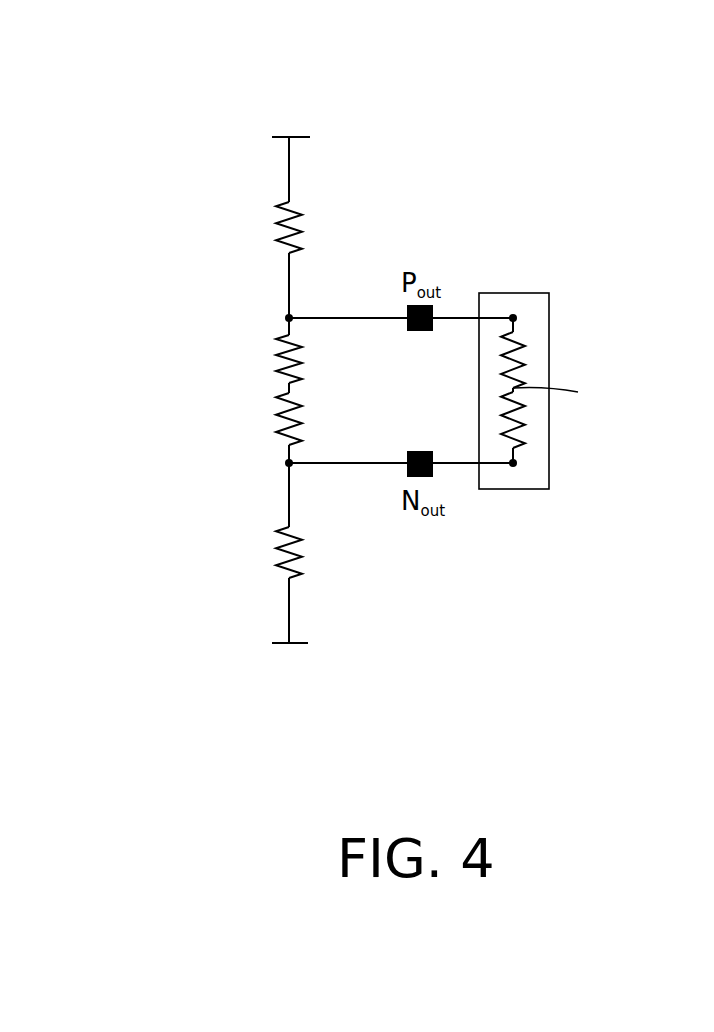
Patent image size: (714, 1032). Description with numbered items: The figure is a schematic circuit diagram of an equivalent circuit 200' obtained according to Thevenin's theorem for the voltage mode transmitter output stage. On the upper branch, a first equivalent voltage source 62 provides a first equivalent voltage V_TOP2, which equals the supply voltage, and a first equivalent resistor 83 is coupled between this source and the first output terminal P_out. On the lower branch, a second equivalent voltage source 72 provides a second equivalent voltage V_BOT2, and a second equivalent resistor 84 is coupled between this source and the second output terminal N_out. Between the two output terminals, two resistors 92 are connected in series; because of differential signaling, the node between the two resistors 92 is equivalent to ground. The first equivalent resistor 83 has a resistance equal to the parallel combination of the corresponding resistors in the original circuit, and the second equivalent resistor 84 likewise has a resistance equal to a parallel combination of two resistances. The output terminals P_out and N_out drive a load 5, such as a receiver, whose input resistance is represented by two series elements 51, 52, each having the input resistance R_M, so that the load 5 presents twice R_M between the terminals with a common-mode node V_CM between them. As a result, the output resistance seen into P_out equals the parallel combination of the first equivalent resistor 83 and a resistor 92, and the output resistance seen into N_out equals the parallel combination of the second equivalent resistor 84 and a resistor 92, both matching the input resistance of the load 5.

The equivalent circuit 200' is at (119, 36).
The first equivalent voltage source 62 is at (272, 136).
The first equivalent resistor 83 is at (282, 221).
The resistors 92 is at (282, 357).
The second equivalent resistor 84 is at (282, 548).
The second equivalent voltage source 72 is at (272, 647).
The load 5 is at (549, 310).
The input resistance element 51 is at (517, 360).
The input resistance element 52 is at (517, 432).